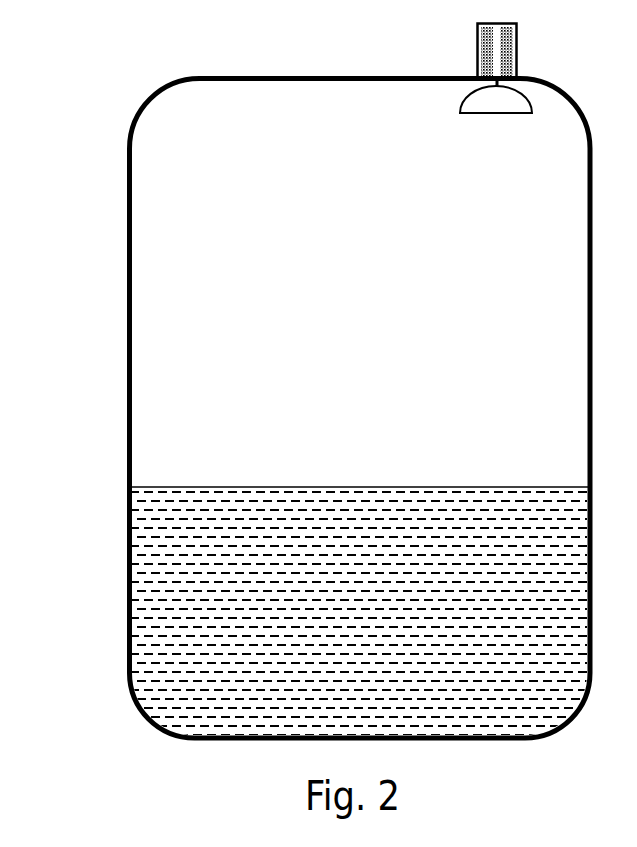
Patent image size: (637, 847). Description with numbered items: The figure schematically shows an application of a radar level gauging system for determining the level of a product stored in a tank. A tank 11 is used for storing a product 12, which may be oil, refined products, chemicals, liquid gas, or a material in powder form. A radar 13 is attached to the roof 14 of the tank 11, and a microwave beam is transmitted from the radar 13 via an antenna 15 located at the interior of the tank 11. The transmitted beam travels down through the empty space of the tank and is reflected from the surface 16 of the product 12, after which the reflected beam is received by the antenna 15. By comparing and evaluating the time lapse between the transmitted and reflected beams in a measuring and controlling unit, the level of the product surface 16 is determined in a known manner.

The tank 11 is at (125, 252).
The product 12 is at (200, 566).
The radar 13 is at (517, 56).
The roof 14 is at (300, 80).
The antenna 15 is at (462, 105).
The surface 16 is at (355, 487).